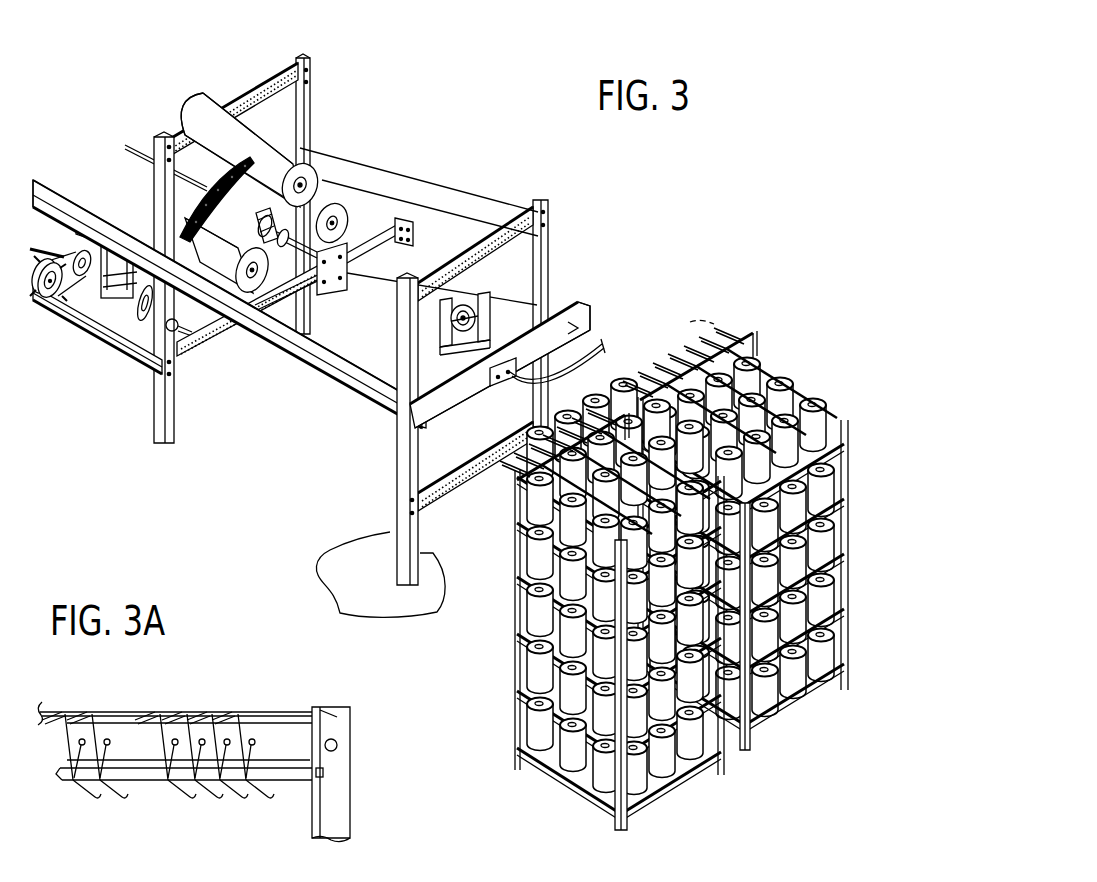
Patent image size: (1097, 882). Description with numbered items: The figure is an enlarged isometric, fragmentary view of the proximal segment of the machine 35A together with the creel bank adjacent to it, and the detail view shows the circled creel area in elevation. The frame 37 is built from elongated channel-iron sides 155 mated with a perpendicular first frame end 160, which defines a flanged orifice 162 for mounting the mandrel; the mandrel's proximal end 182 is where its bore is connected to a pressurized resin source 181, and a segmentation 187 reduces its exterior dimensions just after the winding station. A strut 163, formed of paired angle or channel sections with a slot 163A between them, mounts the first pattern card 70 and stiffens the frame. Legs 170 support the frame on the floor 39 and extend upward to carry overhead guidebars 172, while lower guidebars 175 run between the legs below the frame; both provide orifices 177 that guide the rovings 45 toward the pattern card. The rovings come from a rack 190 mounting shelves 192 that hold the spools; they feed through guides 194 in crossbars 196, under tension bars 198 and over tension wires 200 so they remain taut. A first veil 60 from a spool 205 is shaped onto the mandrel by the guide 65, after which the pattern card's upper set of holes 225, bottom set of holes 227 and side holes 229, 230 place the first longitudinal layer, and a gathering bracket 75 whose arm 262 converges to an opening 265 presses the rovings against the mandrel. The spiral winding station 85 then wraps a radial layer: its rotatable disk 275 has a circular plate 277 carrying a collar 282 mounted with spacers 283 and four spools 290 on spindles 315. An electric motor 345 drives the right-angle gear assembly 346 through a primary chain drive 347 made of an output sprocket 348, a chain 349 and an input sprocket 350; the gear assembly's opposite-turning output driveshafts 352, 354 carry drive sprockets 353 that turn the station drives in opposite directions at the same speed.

In FIG. 3, the proximal segment of the machine 35A is at (468, 133).
In FIG. 3, the frame 37 is at (467, 178).
In FIG. 3, the floor 39 is at (405, 596).
In FIG. 3, the rovings 45 is at (691, 348).
In FIG. 3A, the rovings 45 is at (238, 738).
In FIG. 3, the first veil 60 is at (464, 298).
In FIG. 3, the guide 65 is at (357, 300).
In FIG. 3, the first pattern card 70 is at (334, 252).
In FIG. 3, the gathering bracket 75 is at (343, 233).
In FIG. 3, the spiral winding station 85 is at (320, 146).
In FIG. 3, the sides 155 is at (456, 242).
In FIG. 3, the first frame end 160 is at (598, 306).
In FIG. 3, the flanged orifice 162 is at (528, 384).
In FIG. 3, the strut 163 is at (353, 247).
In FIG. 3, the slot 163A is at (350, 272).
In FIG. 3, the legs 170 is at (160, 398).
In FIG. 3, the overhead guidebars 172 is at (305, 112).
In FIG. 3, the lower guidebars 175 is at (446, 480).
In FIG. 3, the orifices 177 is at (281, 74).
In FIG. 3, the pressurized resin source 181 is at (605, 345).
In FIG. 3, the proximal end of the mandrel 182 is at (497, 392).
In FIG. 3, the segmentation 187 is at (186, 203).
In FIG. 3, the rack 190 is at (838, 442).
In FIG. 3, the shelves 192 is at (522, 546).
In FIG. 3, the guides 194 is at (742, 338).
In FIG. 3, the crossbars 196 is at (756, 346).
In FIG. 3A, the crossbars 196 is at (300, 742).
In FIG. 3A, the tension bars 198 is at (228, 778).
In FIG. 3A, the tension wires 200 is at (265, 710).
In FIG. 3, the spool 205 is at (546, 306).
In FIG. 3, the upper set of holes 225 is at (301, 302).
In FIG. 3, the bottom set of holes 227 is at (352, 298).
In FIG. 3, the side holes 229 is at (325, 297).
In FIG. 3, the side holes 230 is at (452, 240).
In FIG. 3, the arm 262 is at (373, 228).
In FIG. 3, the opening 265 is at (345, 218).
In FIG. 3, the rotatable disk 275 is at (296, 170).
In FIG. 3, the circular plate 277 is at (242, 142).
In FIG. 3, the collar 282 is at (183, 150).
In FIG. 3, the spacers 283 is at (200, 178).
In FIG. 3, the spools 290 is at (272, 160).
In FIG. 3, the spindles 315 is at (252, 292).
In FIG. 3, the electric motor 345 is at (120, 214).
In FIG. 3, the right-angle gear assembly 346 is at (66, 240).
In FIG. 3, the primary chain drive 347 is at (58, 323).
In FIG. 3, the output sprocket 348 is at (126, 300).
In FIG. 3, the chain 349 is at (86, 304).
In FIG. 3, the input sprocket 350 is at (50, 309).
In FIG. 3, the output driveshaft 352 is at (60, 244).
In FIG. 3, the drive sprockets 353 is at (146, 310).
In FIG. 3, the output driveshaft 354 is at (131, 303).